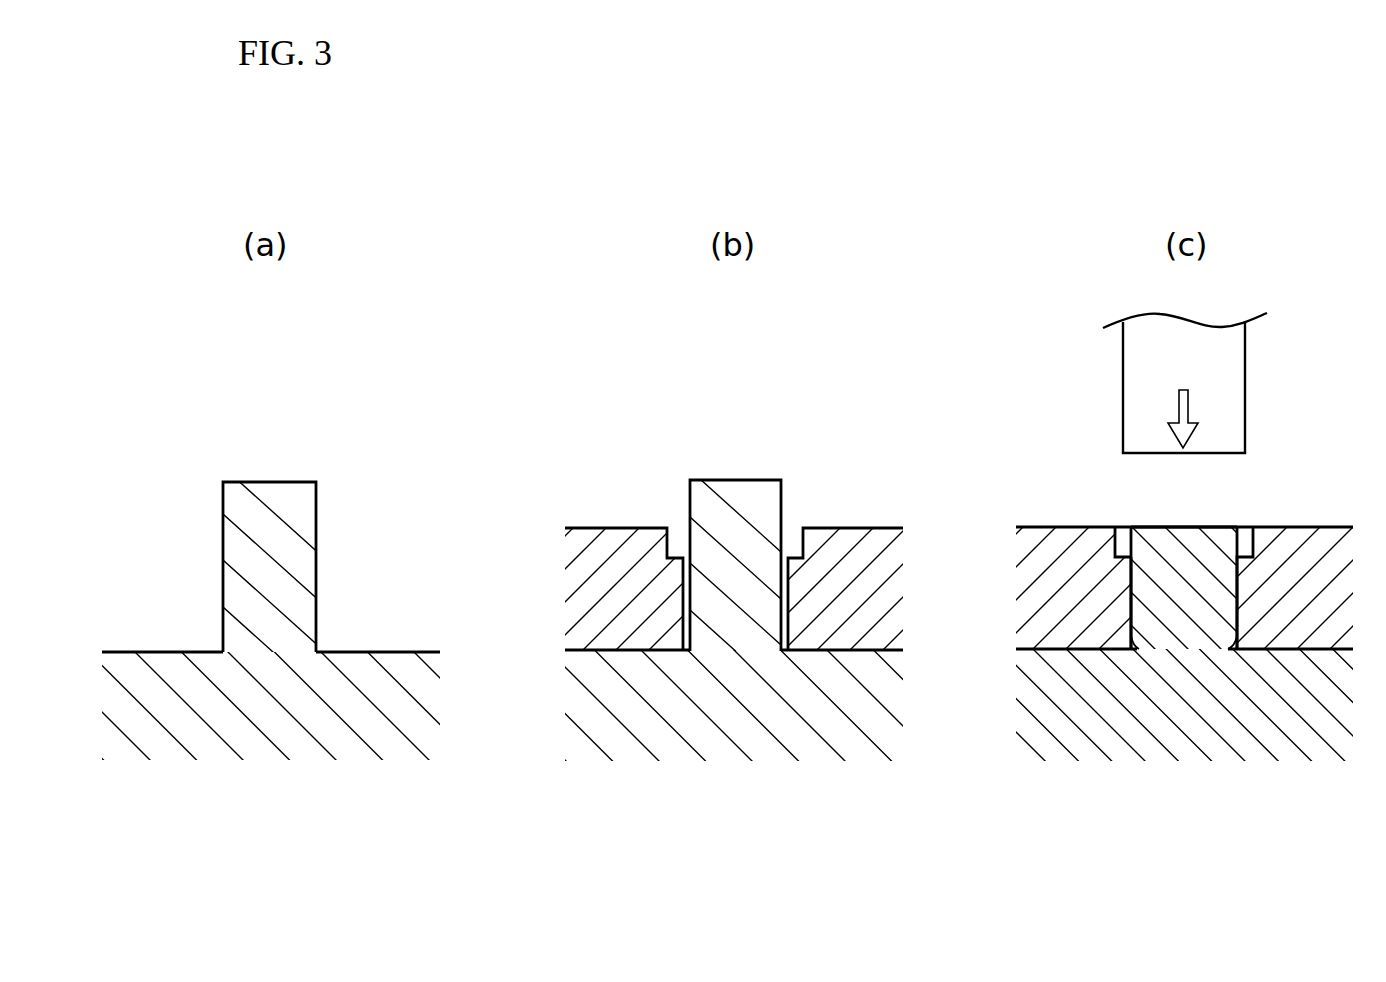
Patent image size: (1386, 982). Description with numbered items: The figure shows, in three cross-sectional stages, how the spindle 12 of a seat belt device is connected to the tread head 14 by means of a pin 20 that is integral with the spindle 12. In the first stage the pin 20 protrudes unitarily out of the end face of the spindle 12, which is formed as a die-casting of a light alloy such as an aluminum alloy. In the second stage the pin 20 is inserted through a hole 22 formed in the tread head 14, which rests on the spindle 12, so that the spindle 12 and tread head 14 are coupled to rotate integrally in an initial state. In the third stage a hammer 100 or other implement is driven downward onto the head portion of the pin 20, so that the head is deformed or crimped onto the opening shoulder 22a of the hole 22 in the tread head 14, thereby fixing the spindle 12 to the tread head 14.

The spindle 12 is at (230, 732).
The tread head 14 is at (598, 550).
The pin 20 is at (277, 502).
The hole 22 is at (786, 594).
The opening shoulder 22a is at (1117, 552).
The hammer 100 is at (1232, 397).